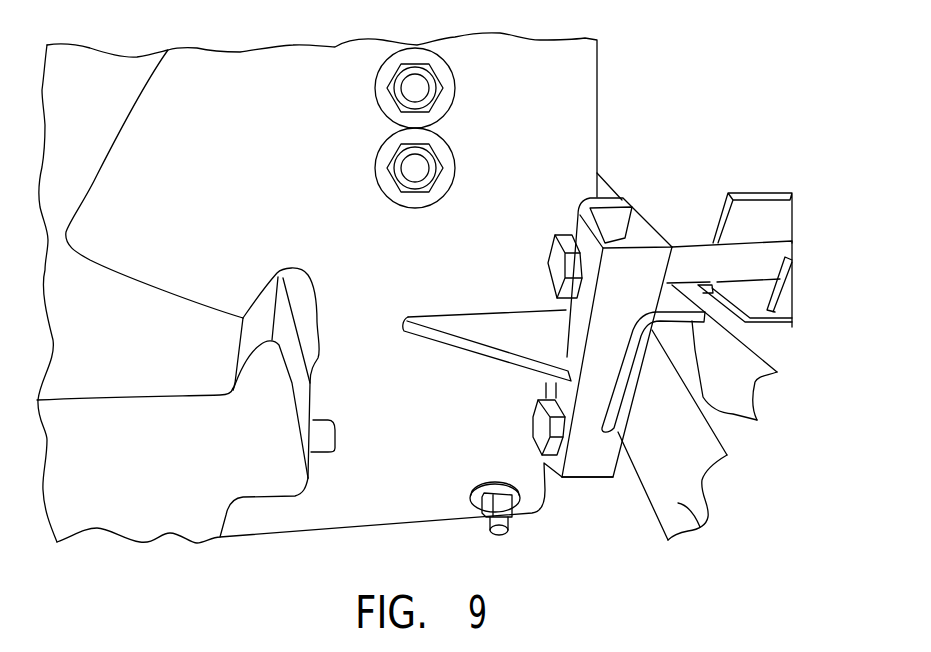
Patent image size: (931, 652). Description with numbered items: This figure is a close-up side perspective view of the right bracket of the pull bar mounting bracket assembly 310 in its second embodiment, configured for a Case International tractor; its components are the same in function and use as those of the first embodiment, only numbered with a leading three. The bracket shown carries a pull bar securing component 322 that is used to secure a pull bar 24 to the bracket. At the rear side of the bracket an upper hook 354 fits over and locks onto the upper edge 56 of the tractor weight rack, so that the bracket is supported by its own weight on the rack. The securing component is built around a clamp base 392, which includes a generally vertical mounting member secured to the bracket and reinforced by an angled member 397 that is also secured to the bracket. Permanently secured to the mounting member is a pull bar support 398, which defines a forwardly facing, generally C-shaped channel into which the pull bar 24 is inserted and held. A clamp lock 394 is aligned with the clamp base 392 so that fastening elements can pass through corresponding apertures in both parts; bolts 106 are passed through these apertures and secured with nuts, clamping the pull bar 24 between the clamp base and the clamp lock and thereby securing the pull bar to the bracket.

The pull bar 24 is at (695, 522).
The upper edge of the weight rack 56 is at (291, 267).
The bolts 106 is at (549, 258).
The pull bar mounting bracket assembly 310 is at (573, 477).
The pull bar securing component 322 is at (729, 206).
The upper hook 354 is at (293, 352).
The clamp base 392 is at (610, 197).
The clamp lock 394 is at (762, 190).
The angled member 397 is at (486, 351).
The pull bar support 398 is at (733, 413).